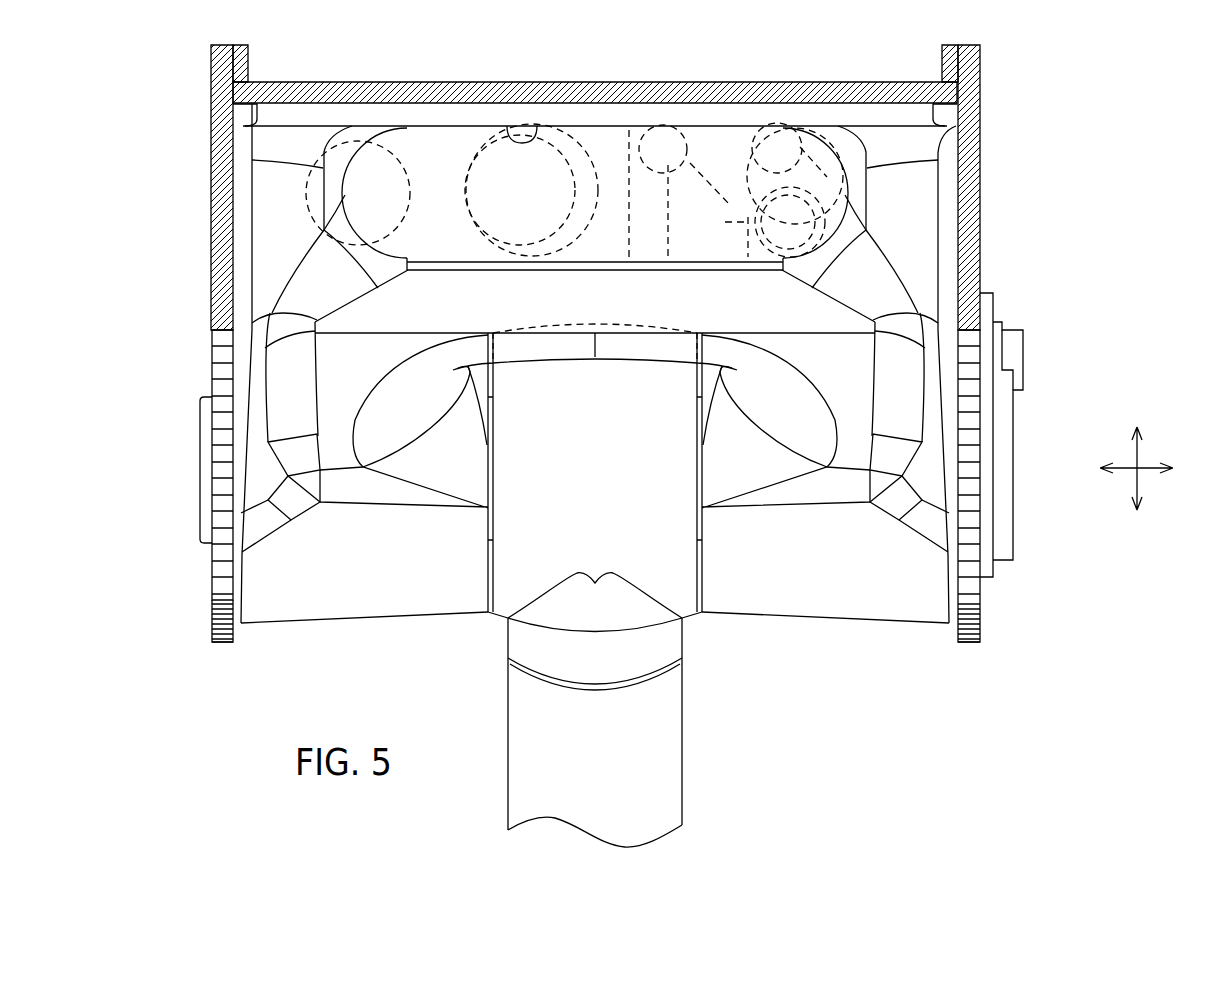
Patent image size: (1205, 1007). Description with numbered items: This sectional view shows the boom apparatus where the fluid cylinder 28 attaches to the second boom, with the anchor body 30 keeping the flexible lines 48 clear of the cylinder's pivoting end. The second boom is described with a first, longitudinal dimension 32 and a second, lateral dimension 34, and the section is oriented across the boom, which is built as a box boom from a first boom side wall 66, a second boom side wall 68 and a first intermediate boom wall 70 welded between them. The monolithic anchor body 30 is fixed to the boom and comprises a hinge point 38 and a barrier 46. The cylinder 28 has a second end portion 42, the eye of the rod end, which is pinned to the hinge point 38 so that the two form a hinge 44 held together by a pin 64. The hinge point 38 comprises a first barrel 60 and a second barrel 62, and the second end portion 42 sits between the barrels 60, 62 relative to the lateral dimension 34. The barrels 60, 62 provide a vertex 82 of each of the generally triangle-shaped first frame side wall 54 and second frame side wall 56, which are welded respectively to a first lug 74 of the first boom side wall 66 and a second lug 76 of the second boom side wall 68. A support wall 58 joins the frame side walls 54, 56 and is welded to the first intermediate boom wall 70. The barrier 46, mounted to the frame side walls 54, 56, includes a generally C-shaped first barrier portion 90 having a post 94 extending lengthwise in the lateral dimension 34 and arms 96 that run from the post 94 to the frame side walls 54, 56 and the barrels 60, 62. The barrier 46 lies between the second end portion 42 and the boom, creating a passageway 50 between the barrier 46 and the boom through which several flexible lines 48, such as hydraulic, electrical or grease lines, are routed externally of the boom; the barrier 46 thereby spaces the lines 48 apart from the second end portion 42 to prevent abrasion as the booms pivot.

The cylinder 28 is at (650, 780).
The anchor body 30 is at (915, 760).
The first, longitudinal dimension 32 is at (1128, 484).
The second, lateral dimension 34 is at (1143, 463).
The hinge point 38 is at (425, 628).
The second end portion 42 is at (583, 405).
The hinge 44 is at (738, 627).
The barrier 46 is at (812, 322).
The flexible line 48 is at (363, 202).
The passageway 50 is at (514, 132).
The first frame side wall 54 is at (267, 460).
The second frame side wall 56 is at (931, 400).
The support wall 58 is at (630, 112).
The first barrel 60 is at (358, 545).
The second barrel 62 is at (800, 544).
The pin 64 is at (203, 485).
The first boom side wall 66 is at (207, 597).
The second boom side wall 68 is at (981, 602).
The first intermediate boom wall 70 is at (760, 92).
The first lug 74 is at (227, 645).
The second lug 76 is at (961, 640).
The vertex 82 is at (240, 623).
The first barrier portion 90 is at (741, 303).
The post 94 is at (590, 298).
The first arm 96 is at (433, 413).